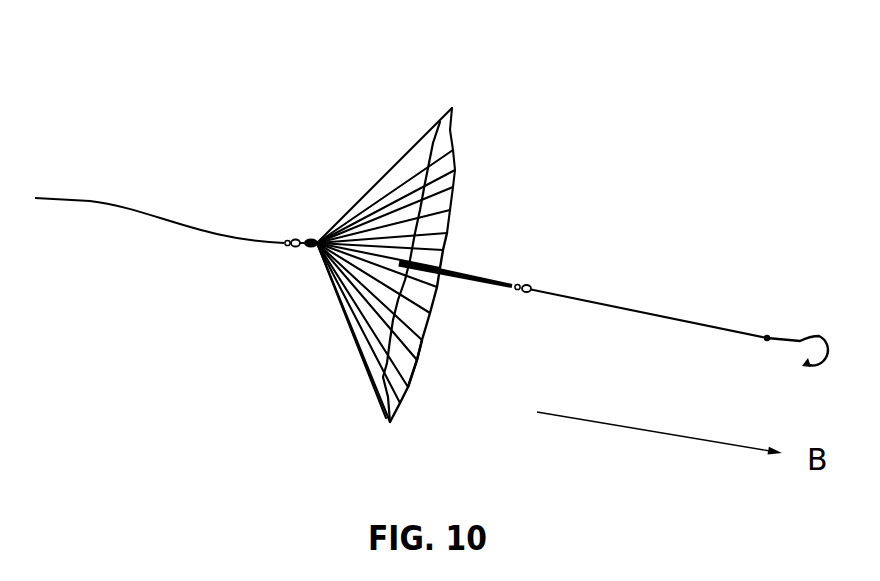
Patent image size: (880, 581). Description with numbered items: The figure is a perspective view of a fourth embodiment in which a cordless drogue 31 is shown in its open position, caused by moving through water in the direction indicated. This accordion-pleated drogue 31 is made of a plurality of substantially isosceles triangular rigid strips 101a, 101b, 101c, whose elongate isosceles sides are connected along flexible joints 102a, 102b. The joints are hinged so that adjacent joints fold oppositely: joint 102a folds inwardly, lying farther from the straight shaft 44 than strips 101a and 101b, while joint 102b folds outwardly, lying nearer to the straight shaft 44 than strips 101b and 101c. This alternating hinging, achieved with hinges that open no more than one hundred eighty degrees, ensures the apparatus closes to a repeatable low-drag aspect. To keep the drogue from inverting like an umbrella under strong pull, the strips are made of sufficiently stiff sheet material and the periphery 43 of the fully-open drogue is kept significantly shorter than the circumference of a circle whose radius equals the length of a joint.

The cordless drogue 31 is at (352, 140).
The periphery 43 is at (417, 365).
The straight shaft 44 is at (489, 290).
The triangular rigid strip 101a is at (452, 138).
The flexible joint 102a is at (453, 158).
The triangular rigid strip 101b is at (455, 163).
The flexible joint 102b is at (453, 170).
The triangular rigid strip 101c is at (453, 190).